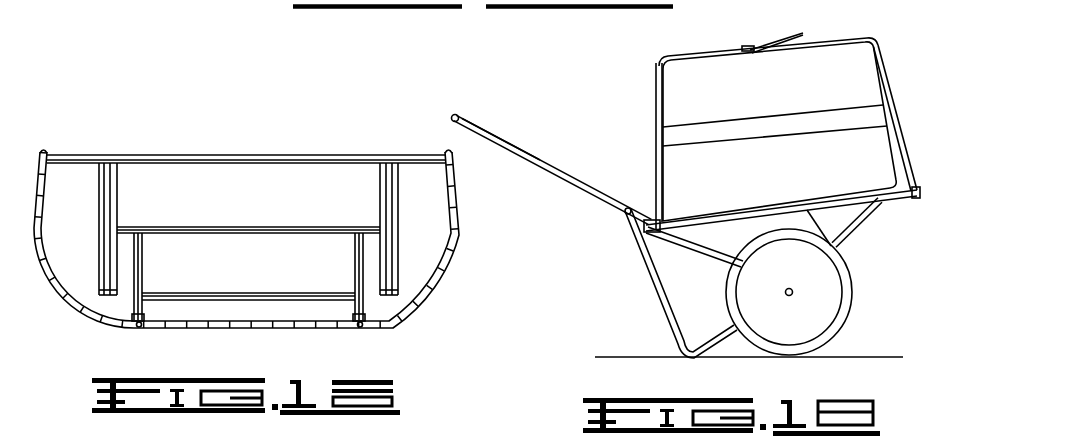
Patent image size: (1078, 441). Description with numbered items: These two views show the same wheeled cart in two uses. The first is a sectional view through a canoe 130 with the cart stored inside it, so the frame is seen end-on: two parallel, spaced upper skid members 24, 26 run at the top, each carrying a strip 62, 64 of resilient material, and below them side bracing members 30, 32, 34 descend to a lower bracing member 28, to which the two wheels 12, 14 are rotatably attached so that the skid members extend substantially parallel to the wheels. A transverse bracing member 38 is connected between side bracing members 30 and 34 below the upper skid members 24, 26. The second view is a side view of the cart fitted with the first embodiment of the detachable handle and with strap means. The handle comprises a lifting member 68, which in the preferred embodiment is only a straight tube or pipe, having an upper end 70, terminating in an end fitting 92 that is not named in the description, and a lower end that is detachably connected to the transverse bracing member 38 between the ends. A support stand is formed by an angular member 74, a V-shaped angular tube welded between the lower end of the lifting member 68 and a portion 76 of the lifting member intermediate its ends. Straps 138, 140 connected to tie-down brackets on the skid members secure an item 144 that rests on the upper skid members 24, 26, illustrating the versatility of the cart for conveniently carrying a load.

In FIG. 15, the wheel 12 is at (110, 199).
In FIG. 16, the wheel 12 is at (810, 325).
In FIG. 15, the wheel 14 is at (385, 205).
In FIG. 15, the upper skid member 24 is at (135, 319).
In FIG. 16, the upper skid member 24 is at (838, 246).
In FIG. 15, the upper skid member 26 is at (365, 318).
In FIG. 15, the lower bracing member 28 is at (205, 230).
In FIG. 15, the side bracing member 30 is at (140, 256).
In FIG. 16, the side bracing member 30 is at (695, 241).
In FIG. 16, the side bracing member 32 is at (857, 232).
In FIG. 15, the side bracing member 34 is at (358, 258).
In FIG. 15, the transverse bracing member 38 is at (180, 297).
In FIG. 15, the strip of resilient material 62 is at (140, 328).
In FIG. 16, the strip of resilient material 62 is at (763, 208).
In FIG. 15, the strip of resilient material 64 is at (362, 323).
In FIG. 16, the lifting member 68 is at (563, 170).
In FIG. 16, the upper end 70 is at (470, 128).
In FIG. 16, the angular member 74 is at (663, 313).
In FIG. 16, the portion of the lifting member 76 is at (630, 207).
In FIG. 16, the handle end cap 92 is at (452, 117).
In FIG. 15, the canoe 130 is at (470, 237).
In FIG. 16, the strap 138 is at (657, 137).
In FIG. 16, the strap 140 is at (903, 130).
In FIG. 16, the item 144 is at (840, 65).